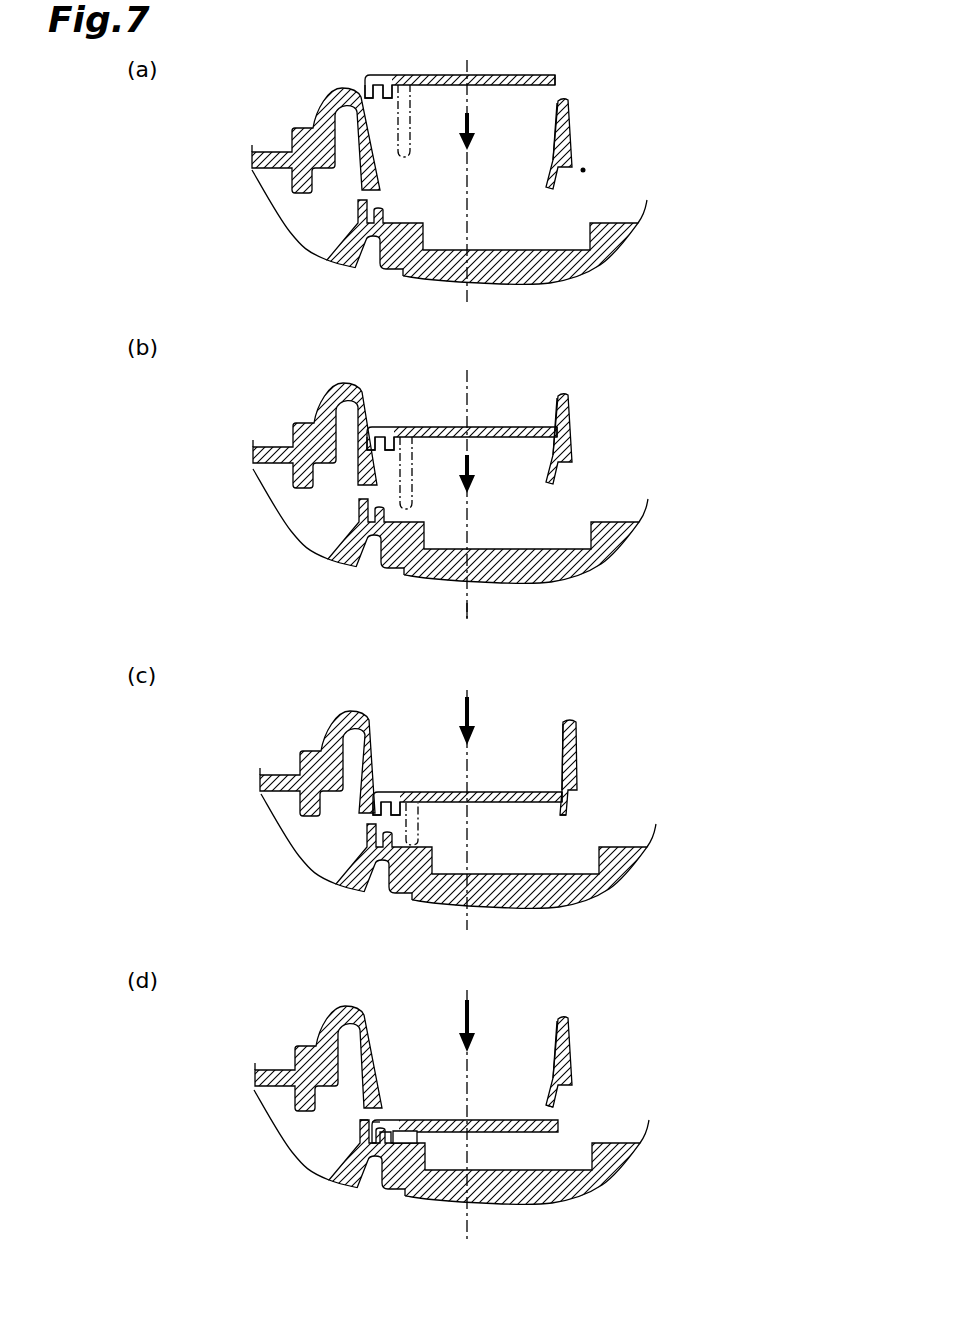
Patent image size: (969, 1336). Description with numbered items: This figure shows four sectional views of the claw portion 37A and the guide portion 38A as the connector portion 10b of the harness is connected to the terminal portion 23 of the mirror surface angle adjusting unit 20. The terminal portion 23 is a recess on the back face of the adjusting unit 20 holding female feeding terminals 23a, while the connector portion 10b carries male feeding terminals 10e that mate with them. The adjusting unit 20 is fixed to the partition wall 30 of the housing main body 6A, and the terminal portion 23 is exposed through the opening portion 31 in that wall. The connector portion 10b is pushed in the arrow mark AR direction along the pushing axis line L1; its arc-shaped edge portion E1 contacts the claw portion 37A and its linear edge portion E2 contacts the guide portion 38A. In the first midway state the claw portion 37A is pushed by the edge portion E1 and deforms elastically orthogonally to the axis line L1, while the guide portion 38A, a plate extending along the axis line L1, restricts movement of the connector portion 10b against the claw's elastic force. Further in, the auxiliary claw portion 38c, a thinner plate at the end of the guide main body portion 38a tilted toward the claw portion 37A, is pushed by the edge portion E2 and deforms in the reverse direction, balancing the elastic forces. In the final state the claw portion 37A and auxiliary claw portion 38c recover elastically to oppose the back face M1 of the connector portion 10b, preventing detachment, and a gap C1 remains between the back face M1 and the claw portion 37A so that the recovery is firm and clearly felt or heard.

The housing main body 6A is at (293, 584).
The claw portion 37A is at (330, 93).
The edge portion E1 is at (364, 88).
The connector portion 10b is at (531, 74).
The edge portion E2 is at (553, 83).
The partition wall 30 is at (252, 146).
The arrow mark direction AR is at (470, 121).
The guide portion 38A is at (578, 603).
The guide main body portion 38a is at (565, 146).
The opening portion 31 is at (587, 170).
The feeding terminal 10e is at (414, 130).
The terminal portion 23 is at (481, 711).
The feeding terminal 23a is at (374, 252).
The mirror surface angle adjusting unit 20 is at (474, 701).
The pushing axis line L1 is at (468, 612).
The auxiliary claw portion 38c is at (560, 809).
The back face M1 is at (411, 1122).
The gap C1 is at (362, 1116).